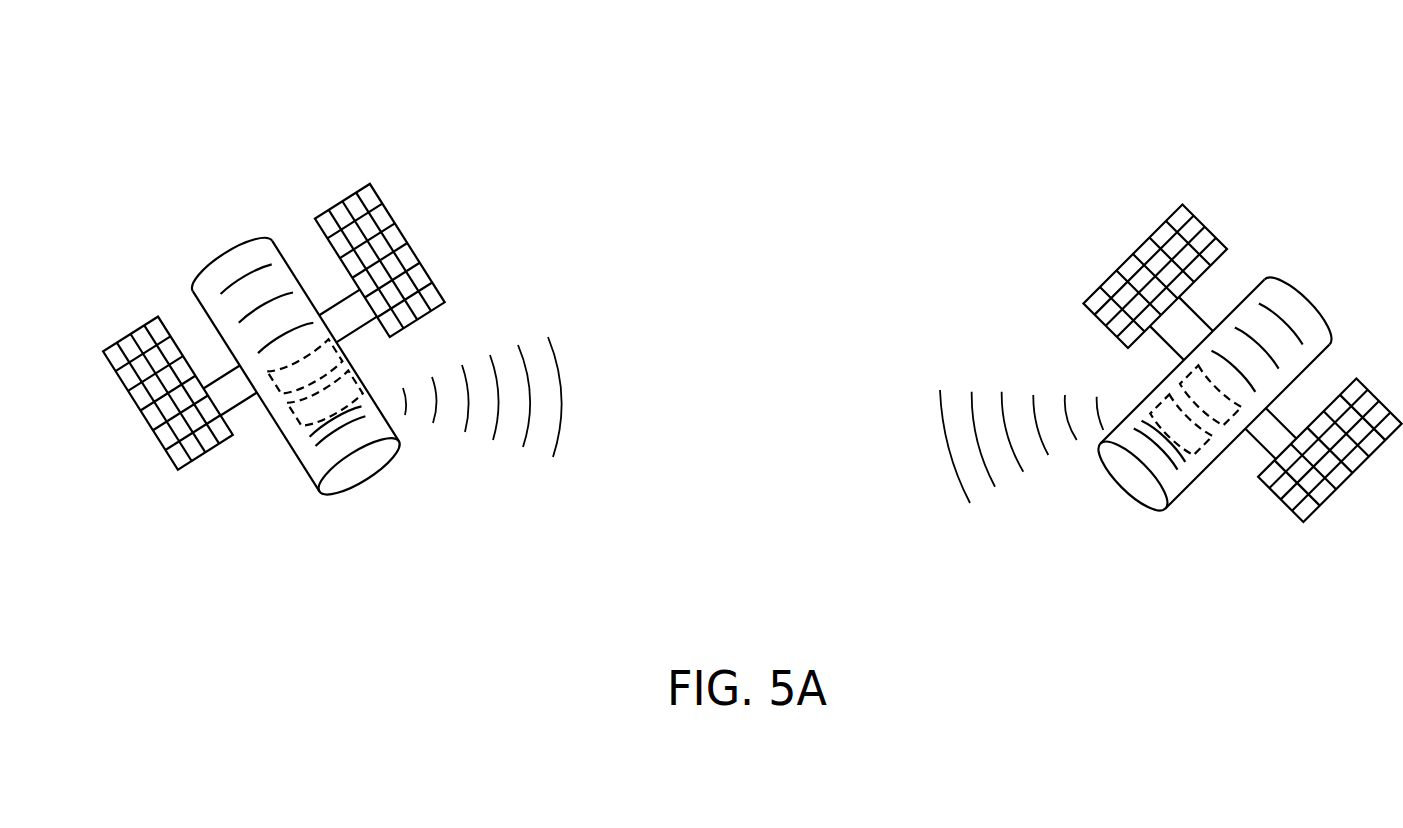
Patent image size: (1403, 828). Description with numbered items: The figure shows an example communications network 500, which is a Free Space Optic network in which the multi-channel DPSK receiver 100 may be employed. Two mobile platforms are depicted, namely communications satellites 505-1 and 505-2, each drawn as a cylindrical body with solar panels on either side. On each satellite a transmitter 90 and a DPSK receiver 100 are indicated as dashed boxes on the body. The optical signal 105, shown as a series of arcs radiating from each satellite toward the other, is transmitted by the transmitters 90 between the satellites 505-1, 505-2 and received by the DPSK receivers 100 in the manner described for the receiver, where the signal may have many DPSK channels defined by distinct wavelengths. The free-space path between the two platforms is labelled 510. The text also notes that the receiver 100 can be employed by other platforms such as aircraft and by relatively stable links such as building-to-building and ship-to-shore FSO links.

The communications network 500 is at (942, 126).
The communications satellite 505-1 is at (263, 241).
The communications satellite 505-2 is at (1278, 280).
The optical transmitter 90 is at (280, 391).
The DPSK receiver 100 is at (303, 424).
The optical signal 105 is at (569, 335).
The inter-satellite link 510 is at (860, 466).